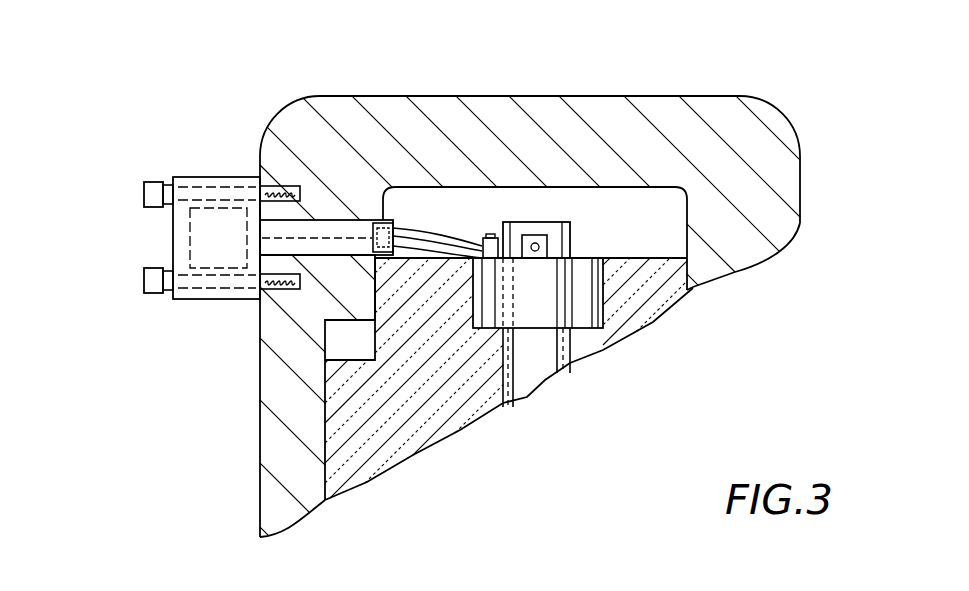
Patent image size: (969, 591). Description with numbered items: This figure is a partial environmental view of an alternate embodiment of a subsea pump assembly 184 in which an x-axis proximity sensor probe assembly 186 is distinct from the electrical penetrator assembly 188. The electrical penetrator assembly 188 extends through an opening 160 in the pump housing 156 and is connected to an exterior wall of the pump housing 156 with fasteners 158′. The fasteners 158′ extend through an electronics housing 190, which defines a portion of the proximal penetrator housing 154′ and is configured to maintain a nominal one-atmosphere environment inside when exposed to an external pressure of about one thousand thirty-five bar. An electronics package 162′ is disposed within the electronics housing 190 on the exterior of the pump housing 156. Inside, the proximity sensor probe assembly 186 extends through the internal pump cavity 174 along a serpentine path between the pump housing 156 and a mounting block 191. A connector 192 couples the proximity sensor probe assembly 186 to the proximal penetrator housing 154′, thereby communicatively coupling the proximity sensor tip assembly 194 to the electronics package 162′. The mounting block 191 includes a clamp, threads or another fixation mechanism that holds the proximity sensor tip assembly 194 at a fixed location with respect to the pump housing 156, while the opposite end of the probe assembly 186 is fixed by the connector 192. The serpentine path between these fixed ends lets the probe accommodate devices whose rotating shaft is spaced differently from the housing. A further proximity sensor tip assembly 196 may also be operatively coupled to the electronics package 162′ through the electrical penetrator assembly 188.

The subsea pump assembly 184 is at (686, 64).
The pump housing 156 is at (773, 140).
The internal pump cavity 174 is at (447, 210).
The electrical penetrator assembly 188 is at (209, 170).
The fasteners 158′ is at (142, 198).
The proximal penetrator housing 154′ is at (178, 306).
The electronics package 162′ is at (222, 268).
The electronics housing 190 is at (252, 299).
The opening 160 is at (322, 221).
The connector 192 is at (380, 223).
The mounting block 191 is at (536, 222).
The proximity sensor tip assembly 196 is at (538, 258).
The proximity sensor tip assembly 194 is at (488, 262).
The x-axis proximity sensor probe assembly 186 is at (424, 259).